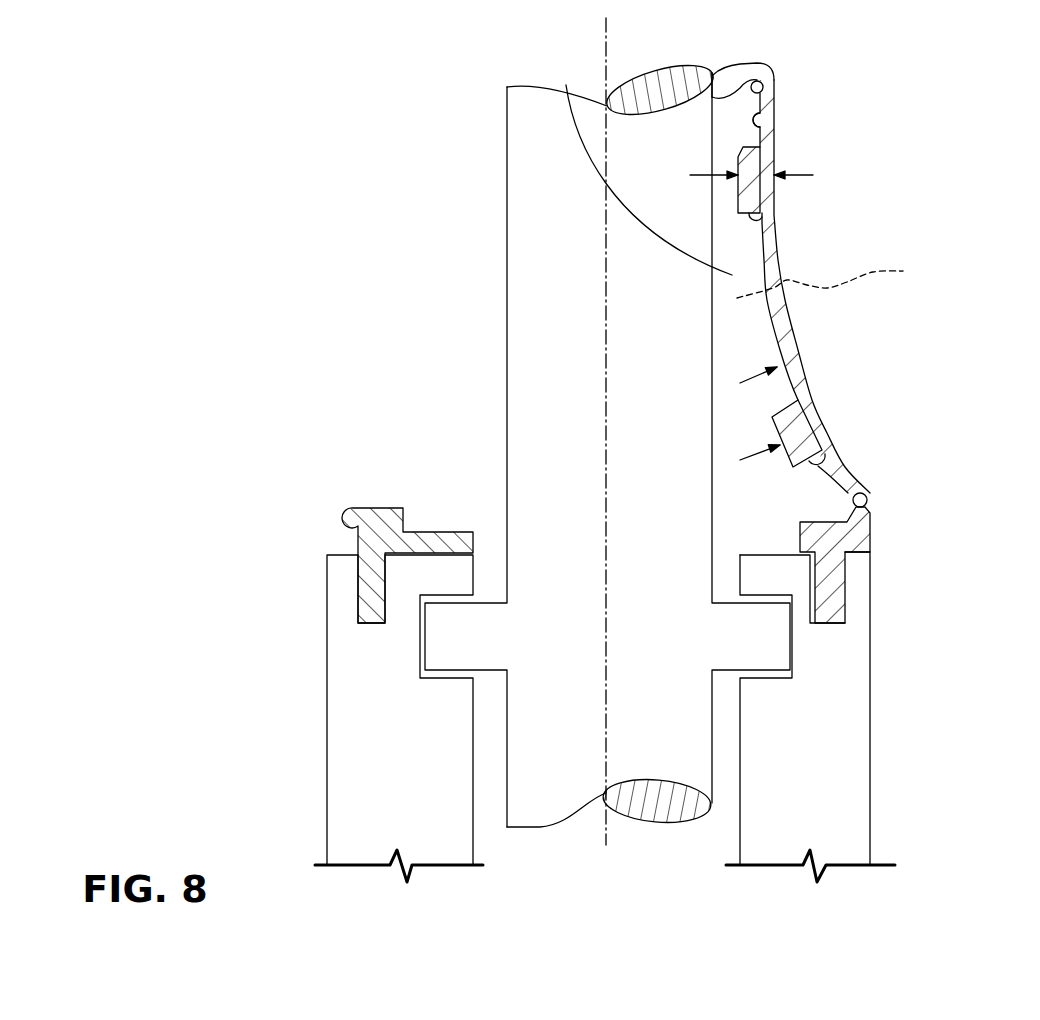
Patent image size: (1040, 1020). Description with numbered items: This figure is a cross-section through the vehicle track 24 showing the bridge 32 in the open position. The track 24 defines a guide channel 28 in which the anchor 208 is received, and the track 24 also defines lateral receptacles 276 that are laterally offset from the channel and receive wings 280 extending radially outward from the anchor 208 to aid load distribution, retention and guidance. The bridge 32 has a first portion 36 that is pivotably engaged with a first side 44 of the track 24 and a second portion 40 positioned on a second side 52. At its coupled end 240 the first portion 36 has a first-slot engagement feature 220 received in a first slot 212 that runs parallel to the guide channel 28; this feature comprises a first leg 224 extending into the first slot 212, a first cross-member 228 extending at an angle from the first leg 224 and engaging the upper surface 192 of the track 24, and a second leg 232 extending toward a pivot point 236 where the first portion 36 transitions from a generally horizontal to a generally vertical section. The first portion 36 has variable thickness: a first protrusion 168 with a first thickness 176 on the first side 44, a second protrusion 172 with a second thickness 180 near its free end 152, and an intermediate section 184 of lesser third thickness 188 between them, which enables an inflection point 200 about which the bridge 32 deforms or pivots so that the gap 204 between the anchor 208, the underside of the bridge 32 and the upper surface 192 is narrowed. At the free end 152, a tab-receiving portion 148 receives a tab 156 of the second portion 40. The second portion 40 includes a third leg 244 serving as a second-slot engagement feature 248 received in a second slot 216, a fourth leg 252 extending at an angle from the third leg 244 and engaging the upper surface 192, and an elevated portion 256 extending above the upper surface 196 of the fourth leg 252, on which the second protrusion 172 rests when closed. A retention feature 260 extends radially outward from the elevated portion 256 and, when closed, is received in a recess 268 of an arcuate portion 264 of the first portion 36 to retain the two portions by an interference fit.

The track 24 is at (877, 826).
The guide channel 28 is at (473, 828).
The bridge 32 is at (778, 83).
The first portion 36 is at (781, 253).
The second portion 40 is at (352, 613).
The first side 44 is at (857, 585).
The second side 52 is at (333, 713).
The tab-receiving portion 148 is at (754, 126).
The free end 152 is at (728, 65).
The tab 156 is at (362, 503).
The first protrusion 168 is at (847, 460).
The second protrusion 172 is at (766, 225).
The first thickness 176 is at (826, 419).
The second thickness 180 is at (815, 174).
The intermediate section 184 is at (794, 322).
The third thickness 188 is at (804, 350).
The upper surface 192 is at (760, 567).
The upper surface 196 is at (418, 527).
The inflection point 200 is at (840, 280).
The gap 204 is at (566, 85).
The anchor 208 is at (527, 172).
The first slot 212 is at (830, 627).
The second slot 216 is at (383, 625).
The first-slot engagement feature 220 is at (847, 567).
The first leg 224 is at (828, 605).
The first cross-member 228 is at (830, 530).
The second leg 232 is at (863, 512).
The pivot point 236 is at (867, 493).
The coupled end 240 is at (870, 540).
The third leg 244 is at (355, 588).
The second-slot engagement feature 248 is at (355, 552).
The fourth leg 252 is at (457, 545).
The elevated portion 256 is at (392, 506).
The retention feature 260 is at (342, 512).
The arcuate portion 264 is at (713, 75).
The recess 268 is at (760, 80).
The lateral receptacles 276 is at (767, 678).
The wings 280 is at (753, 645).